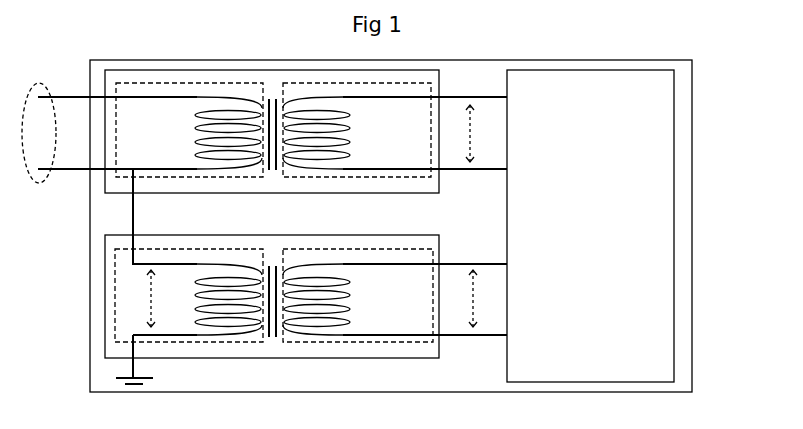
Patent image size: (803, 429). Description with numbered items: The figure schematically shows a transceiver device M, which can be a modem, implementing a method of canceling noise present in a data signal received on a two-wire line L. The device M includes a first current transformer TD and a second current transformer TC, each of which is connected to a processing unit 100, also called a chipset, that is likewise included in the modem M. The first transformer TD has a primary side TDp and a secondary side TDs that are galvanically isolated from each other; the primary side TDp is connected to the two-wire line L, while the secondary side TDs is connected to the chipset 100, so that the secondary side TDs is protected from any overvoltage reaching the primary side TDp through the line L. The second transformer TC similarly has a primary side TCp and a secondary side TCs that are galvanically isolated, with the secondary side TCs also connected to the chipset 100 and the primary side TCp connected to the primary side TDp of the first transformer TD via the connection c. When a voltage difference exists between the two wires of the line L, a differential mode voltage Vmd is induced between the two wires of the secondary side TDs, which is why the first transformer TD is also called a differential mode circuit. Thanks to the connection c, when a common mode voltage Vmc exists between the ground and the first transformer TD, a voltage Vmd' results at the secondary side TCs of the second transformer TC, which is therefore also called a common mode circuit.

The device M is at (480, 60).
The 2-wire line L is at (39, 133).
The connection c is at (133, 205).
The first current transformer TD is at (410, 193).
The primary side of the first transformer TDp is at (160, 178).
The secondary side of the first transformer TDs is at (323, 178).
The second current transformer TC is at (408, 358).
The primary side of the second transformer TCp is at (167, 345).
The secondary side of the second transformer TCs is at (327, 343).
The processing unit 100 is at (590, 226).
The differential mode voltage Vmd is at (472, 133).
The common mode voltage Vmc is at (151, 298).
The voltage at the secondary side of the second transformer Vmd' is at (469, 298).